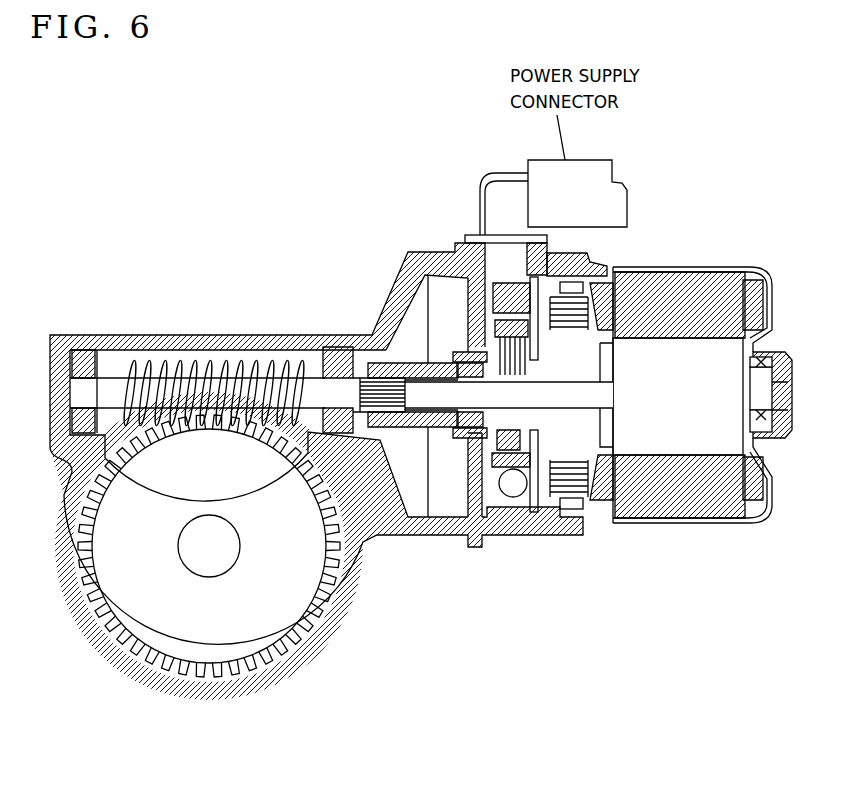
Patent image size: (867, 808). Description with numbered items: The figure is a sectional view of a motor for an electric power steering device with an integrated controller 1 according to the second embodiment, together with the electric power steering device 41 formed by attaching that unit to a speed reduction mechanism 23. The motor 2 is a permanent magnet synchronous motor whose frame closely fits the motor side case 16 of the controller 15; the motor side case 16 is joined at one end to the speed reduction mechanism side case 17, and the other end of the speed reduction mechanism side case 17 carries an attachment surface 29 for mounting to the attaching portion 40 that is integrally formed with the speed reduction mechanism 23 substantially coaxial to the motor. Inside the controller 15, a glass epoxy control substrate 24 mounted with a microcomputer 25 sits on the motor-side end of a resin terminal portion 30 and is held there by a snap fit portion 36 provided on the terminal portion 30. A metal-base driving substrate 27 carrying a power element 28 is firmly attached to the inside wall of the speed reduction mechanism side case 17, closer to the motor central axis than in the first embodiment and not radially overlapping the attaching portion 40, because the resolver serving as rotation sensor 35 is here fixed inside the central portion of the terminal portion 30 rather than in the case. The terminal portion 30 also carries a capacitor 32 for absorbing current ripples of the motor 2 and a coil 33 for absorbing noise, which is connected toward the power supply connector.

The motor for the electric power steering device with the integrated controller 1 is at (421, 468).
The motor 2 is at (598, 418).
The controller 15 is at (338, 468).
The motor side case 16 is at (572, 537).
The speed reduction mechanism side case 17 is at (470, 540).
The speed reduction mechanism 23 is at (222, 718).
The control substrate 24 is at (535, 348).
The microcomputer 25 is at (560, 265).
The driving substrate 27 is at (468, 330).
The power element 28 is at (485, 308).
The attachment surface 29 is at (457, 262).
The terminal portion 30 is at (548, 512).
The capacitor 32 is at (477, 473).
The coil 33 is at (490, 290).
The rotation sensor 35 is at (530, 405).
The snap fit portion 36 is at (553, 513).
The attaching portion 40 is at (458, 543).
The electric power steering device 41 is at (316, 509).